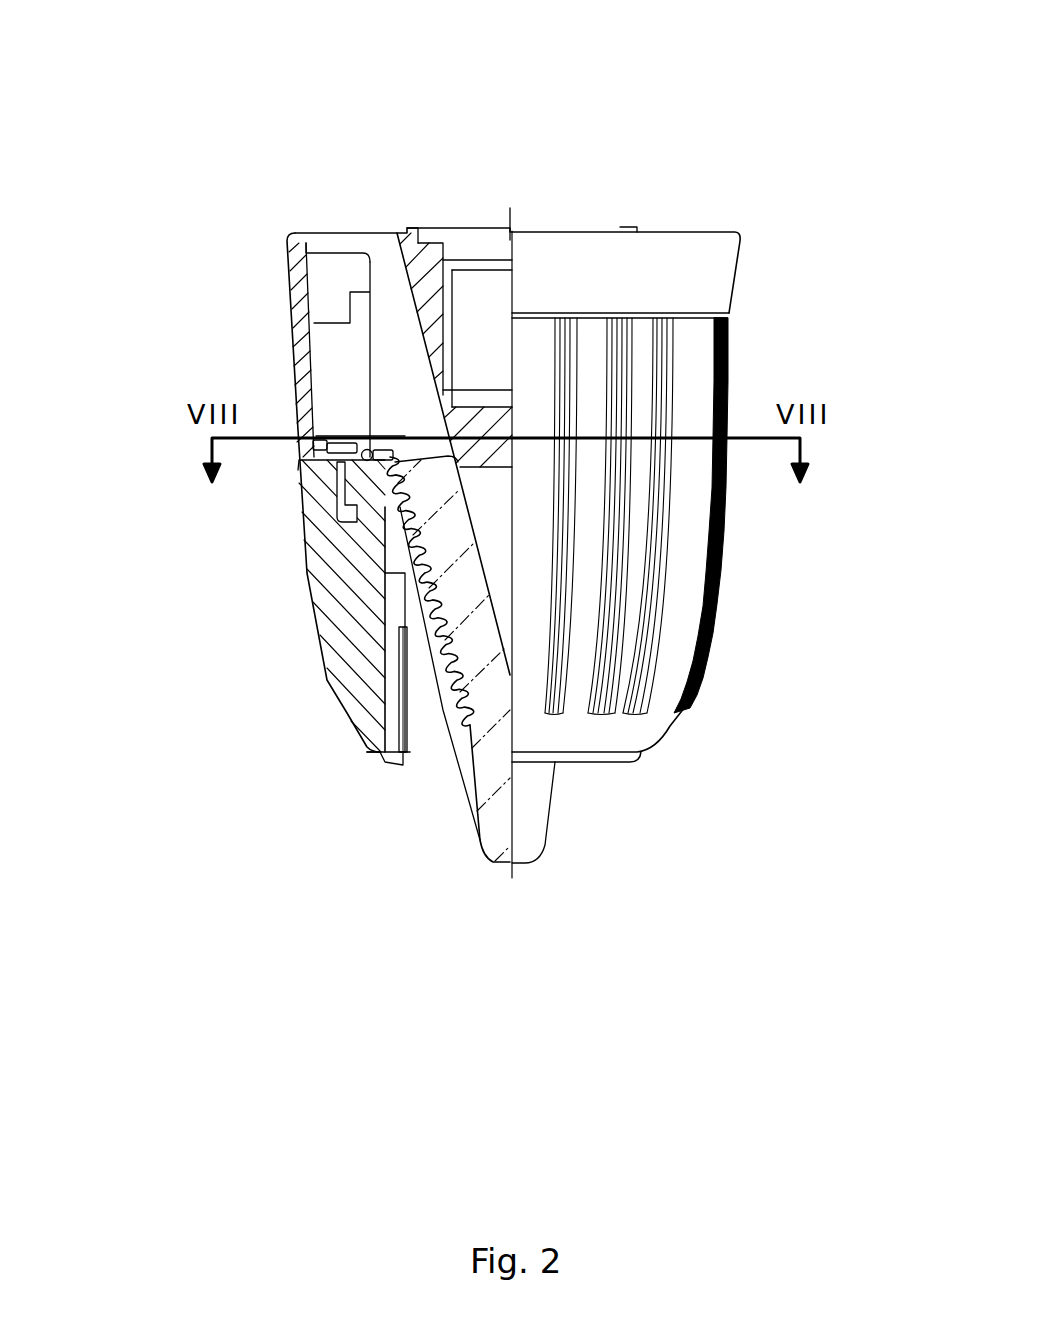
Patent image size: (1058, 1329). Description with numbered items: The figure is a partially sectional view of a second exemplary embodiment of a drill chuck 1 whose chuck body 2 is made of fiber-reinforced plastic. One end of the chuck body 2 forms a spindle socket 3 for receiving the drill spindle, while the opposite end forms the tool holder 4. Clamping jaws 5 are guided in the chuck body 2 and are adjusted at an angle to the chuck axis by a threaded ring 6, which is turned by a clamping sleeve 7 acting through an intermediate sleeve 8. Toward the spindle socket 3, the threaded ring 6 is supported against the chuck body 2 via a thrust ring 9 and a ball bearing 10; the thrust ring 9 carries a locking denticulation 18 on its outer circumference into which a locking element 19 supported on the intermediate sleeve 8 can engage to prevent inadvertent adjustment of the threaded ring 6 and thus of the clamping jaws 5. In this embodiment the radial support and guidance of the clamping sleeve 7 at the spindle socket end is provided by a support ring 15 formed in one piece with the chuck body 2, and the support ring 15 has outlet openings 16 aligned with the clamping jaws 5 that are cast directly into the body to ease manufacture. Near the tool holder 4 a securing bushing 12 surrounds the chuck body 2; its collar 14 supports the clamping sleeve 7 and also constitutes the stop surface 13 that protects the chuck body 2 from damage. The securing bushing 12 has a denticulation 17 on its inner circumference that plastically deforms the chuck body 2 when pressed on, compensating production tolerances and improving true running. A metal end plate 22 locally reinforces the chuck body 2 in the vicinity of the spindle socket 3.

The drill chuck 1 is at (318, 152).
The chuck body 2 is at (418, 258).
The spindle socket 3 is at (497, 303).
The tool holder 4 is at (497, 530).
The clamping jaws 5 is at (490, 830).
The threaded ring 6 is at (352, 653).
The clamping sleeve 7 is at (340, 755).
The intermediate sleeve 8 is at (383, 497).
The thrust ring 9 is at (353, 432).
The ball bearing 10 is at (348, 458).
The securing bushing 12 is at (400, 683).
The stop surface 13 is at (402, 762).
The collar 14 is at (402, 762).
The support ring 15 is at (322, 240).
The outlet openings 16 is at (373, 250).
The denticulation 17 is at (405, 710).
The locking denticulation 18 is at (356, 453).
The locking element 19 is at (350, 440).
The end plate 22 is at (468, 230).